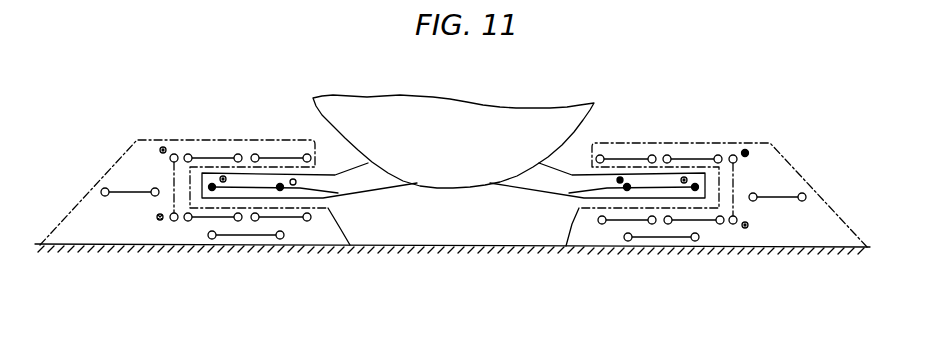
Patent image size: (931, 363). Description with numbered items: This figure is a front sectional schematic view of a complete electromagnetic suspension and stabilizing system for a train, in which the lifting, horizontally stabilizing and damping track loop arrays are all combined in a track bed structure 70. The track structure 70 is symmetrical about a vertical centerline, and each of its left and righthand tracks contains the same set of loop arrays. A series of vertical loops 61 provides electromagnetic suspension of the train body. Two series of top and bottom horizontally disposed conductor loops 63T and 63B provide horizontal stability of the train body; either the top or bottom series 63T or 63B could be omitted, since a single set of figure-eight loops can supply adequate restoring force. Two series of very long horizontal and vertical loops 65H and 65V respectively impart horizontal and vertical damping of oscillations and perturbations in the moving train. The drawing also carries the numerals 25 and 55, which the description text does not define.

The water surface 25 is at (468, 280).
The hydrofoil strut 55 is at (335, 197).
The vertical loops 61 is at (172, 168).
The top horizontally disposed conductor loops 63T is at (265, 153).
The bottom horizontally disposed conductor loops 63B is at (205, 219).
The very long horizontal loops 65H is at (128, 195).
The very long vertical loops 65V is at (257, 236).
The track bed structure 70 is at (342, 232).